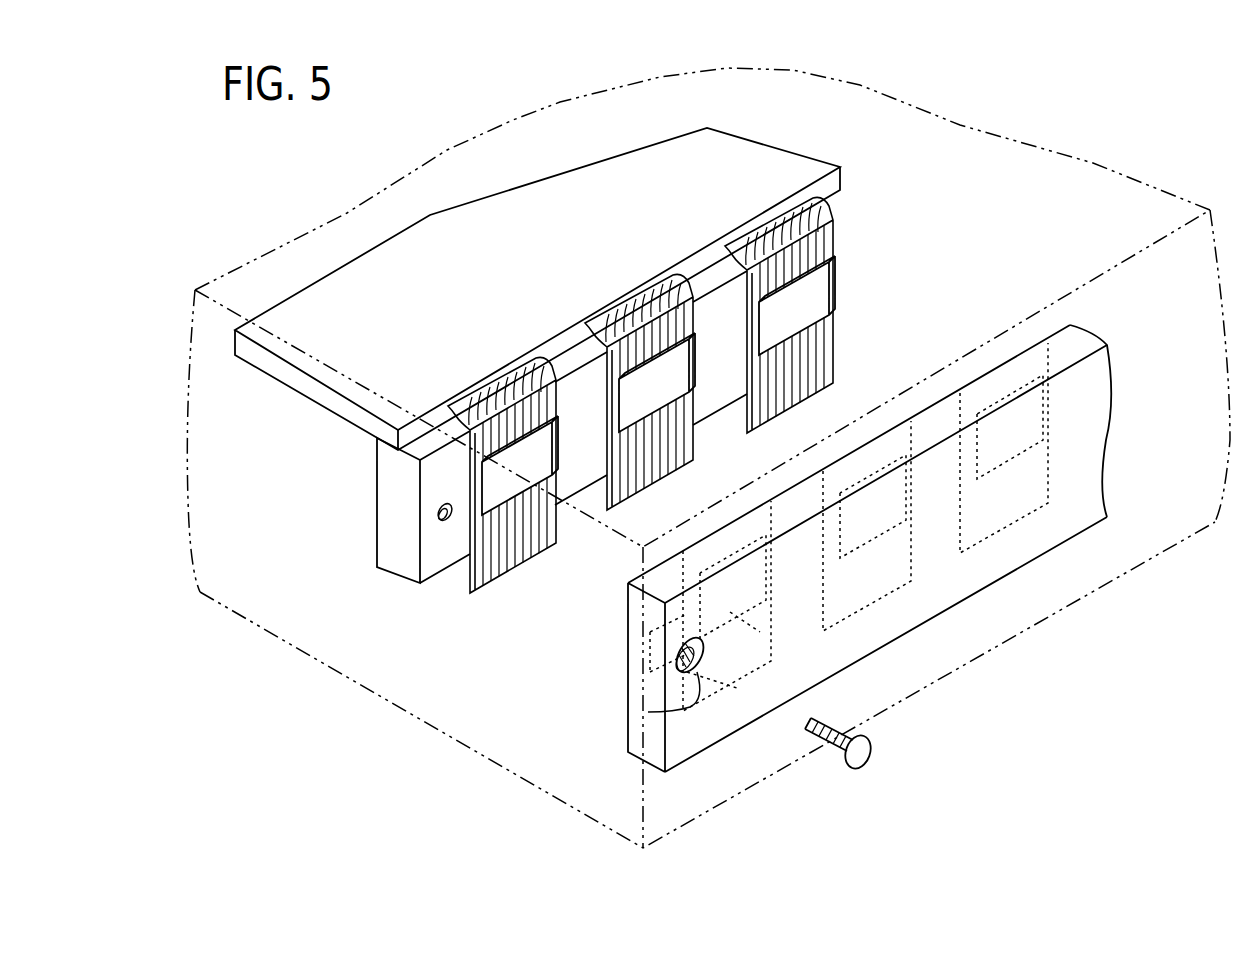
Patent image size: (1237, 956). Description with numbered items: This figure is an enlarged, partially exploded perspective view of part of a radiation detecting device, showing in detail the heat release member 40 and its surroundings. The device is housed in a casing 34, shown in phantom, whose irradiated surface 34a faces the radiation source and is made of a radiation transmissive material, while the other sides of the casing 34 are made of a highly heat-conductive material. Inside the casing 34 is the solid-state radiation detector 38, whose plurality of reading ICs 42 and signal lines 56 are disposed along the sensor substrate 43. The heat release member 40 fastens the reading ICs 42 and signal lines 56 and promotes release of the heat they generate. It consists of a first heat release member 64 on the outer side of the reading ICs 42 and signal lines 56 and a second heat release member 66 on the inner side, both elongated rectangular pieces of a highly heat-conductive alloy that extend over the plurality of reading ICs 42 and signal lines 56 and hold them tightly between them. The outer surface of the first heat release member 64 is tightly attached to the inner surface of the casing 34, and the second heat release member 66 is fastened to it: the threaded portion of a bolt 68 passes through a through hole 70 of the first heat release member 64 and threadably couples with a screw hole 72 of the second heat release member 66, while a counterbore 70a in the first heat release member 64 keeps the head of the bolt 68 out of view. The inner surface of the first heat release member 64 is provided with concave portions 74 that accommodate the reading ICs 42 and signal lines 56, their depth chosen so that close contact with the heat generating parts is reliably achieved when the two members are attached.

The casing 34 is at (740, 798).
The irradiated surface 34a is at (913, 137).
The solid-state radiation detector 38 is at (734, 158).
The heat release member 40 is at (407, 631).
The reading IC 42 is at (824, 298).
The sensor substrate 43 is at (560, 200).
The signal line 56 is at (824, 241).
The first heat release member 64 is at (642, 679).
The second heat release member 66 is at (400, 534).
The bolt 68 is at (867, 754).
The through hole 70 is at (693, 647).
The counterbore 70a is at (648, 712).
The screw hole 72 is at (449, 516).
The concave portion 74 is at (1048, 473).